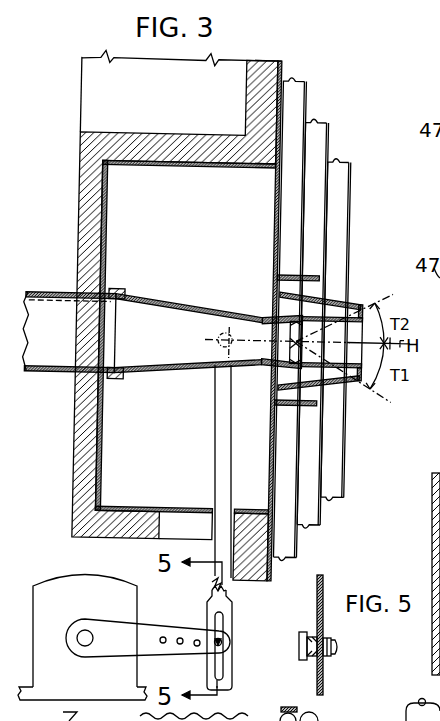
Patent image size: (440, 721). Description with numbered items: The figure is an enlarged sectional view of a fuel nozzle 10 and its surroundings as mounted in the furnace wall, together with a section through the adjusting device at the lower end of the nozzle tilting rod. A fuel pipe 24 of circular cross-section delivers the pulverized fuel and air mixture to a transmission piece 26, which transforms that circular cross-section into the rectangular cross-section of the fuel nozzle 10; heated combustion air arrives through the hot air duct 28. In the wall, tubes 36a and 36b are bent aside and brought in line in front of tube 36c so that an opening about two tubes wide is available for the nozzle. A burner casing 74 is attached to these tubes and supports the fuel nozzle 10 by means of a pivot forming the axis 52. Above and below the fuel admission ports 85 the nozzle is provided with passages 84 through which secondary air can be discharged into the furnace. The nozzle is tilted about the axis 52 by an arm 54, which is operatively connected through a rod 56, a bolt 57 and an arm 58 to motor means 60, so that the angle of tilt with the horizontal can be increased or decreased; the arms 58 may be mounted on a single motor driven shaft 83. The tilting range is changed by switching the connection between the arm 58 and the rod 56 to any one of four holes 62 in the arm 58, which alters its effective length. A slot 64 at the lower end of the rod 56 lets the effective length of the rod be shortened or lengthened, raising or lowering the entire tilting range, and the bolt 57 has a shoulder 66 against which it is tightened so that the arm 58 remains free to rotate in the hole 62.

In FIG. 3, the fuel nozzle 10 is at (366, 345).
In FIG. 5, the fuel nozzle 10 is at (340, 720).
In FIG. 3, the fuel pipe 24 is at (58, 293).
In FIG. 3, the transmission piece 26 is at (165, 299).
In FIG. 3, the hot air duct 28 is at (195, 168).
In FIG. 3, the tube 36a is at (345, 186).
In FIG. 3, the tube 36b is at (325, 138).
In FIG. 3, the tube 36c is at (298, 98).
In FIG. 3, the axis 52 is at (268, 356).
In FIG. 3, the arm 54 is at (235, 333).
In FIG. 3, the rod 56 is at (215, 410).
In FIG. 5, the rod 56 is at (323, 590).
In FIG. 3, the bolt 57 is at (230, 638).
In FIG. 5, the bolt 57 is at (300, 640).
In FIG. 3, the arm 58 is at (130, 650).
In FIG. 5, the arm 58 is at (312, 630).
In FIG. 3, the motor means 60 is at (78, 583).
In FIG. 3, the holes 62 is at (217, 639).
In FIG. 3, the slot 64 is at (218, 665).
In FIG. 5, the slot 64 is at (315, 680).
In FIG. 5, the shoulder 66 is at (325, 630).
In FIG. 3, the burner casing 74 is at (288, 276).
In FIG. 3, the motor driven shaft 83 is at (83, 632).
In FIG. 3, the passages 84 is at (320, 292).
In FIG. 3, the fuel admission ports 85 is at (352, 320).